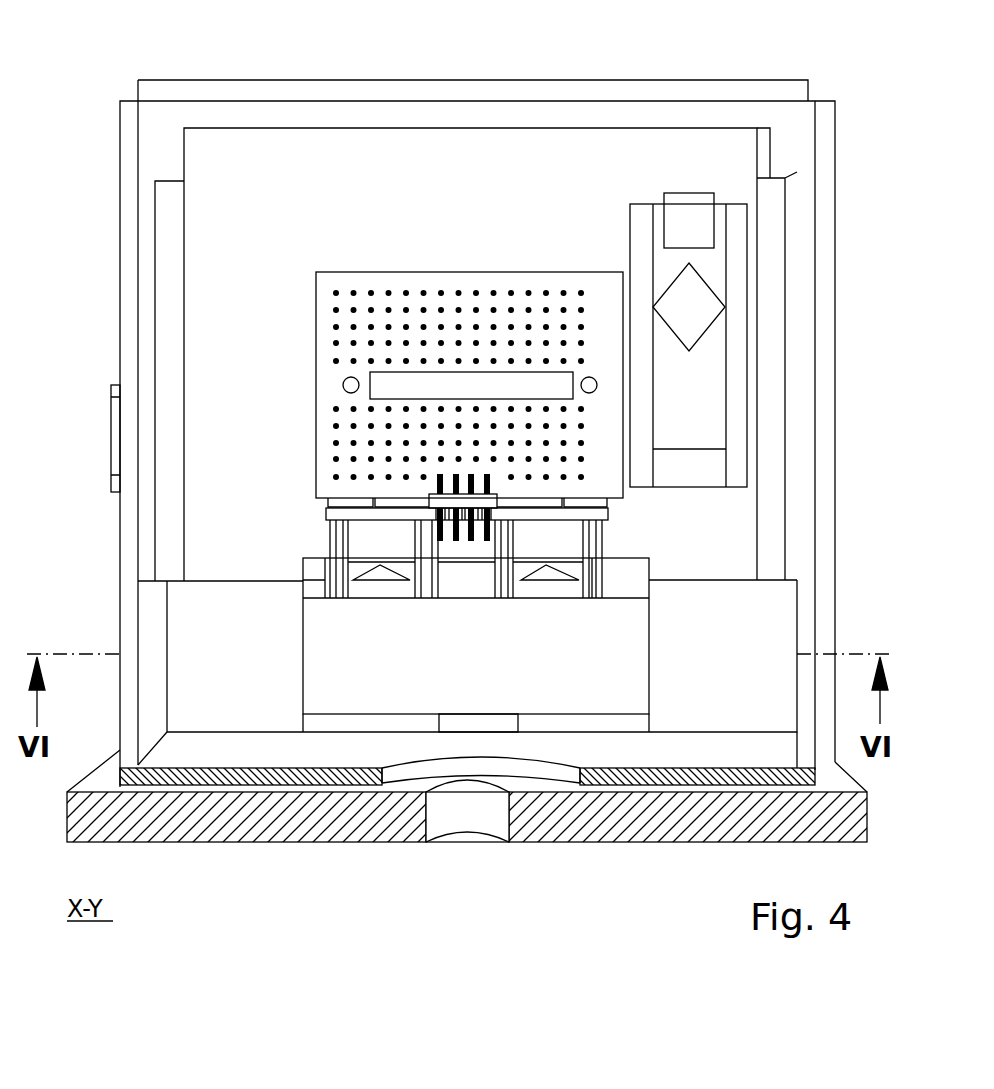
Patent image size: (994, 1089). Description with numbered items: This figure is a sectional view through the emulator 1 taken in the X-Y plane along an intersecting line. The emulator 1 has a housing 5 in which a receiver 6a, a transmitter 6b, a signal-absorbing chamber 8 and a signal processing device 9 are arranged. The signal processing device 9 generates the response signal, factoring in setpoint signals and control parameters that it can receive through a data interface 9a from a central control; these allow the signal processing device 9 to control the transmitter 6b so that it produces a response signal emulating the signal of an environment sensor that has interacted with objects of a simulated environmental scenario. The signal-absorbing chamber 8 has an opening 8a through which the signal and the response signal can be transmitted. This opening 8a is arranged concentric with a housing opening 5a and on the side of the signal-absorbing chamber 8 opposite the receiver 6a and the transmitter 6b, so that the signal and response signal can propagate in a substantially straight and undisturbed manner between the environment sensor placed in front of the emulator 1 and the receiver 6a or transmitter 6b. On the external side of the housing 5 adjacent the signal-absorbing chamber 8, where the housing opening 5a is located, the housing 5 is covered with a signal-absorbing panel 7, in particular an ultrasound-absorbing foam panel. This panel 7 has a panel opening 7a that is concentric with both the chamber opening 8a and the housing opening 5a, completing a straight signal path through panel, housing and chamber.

The emulator 1 is at (68, 76).
The housing 5 is at (835, 494).
The housing opening 5a is at (453, 768).
The receiver 6a is at (387, 586).
The transmitter 6b is at (563, 586).
The signal-absorbing panel 7 is at (867, 820).
The panel opening 7a is at (467, 823).
The signal-absorbing chamber 8 is at (513, 640).
The opening 8a is at (485, 728).
The signal processing device 9 is at (630, 243).
The data interface 9a is at (111, 434).